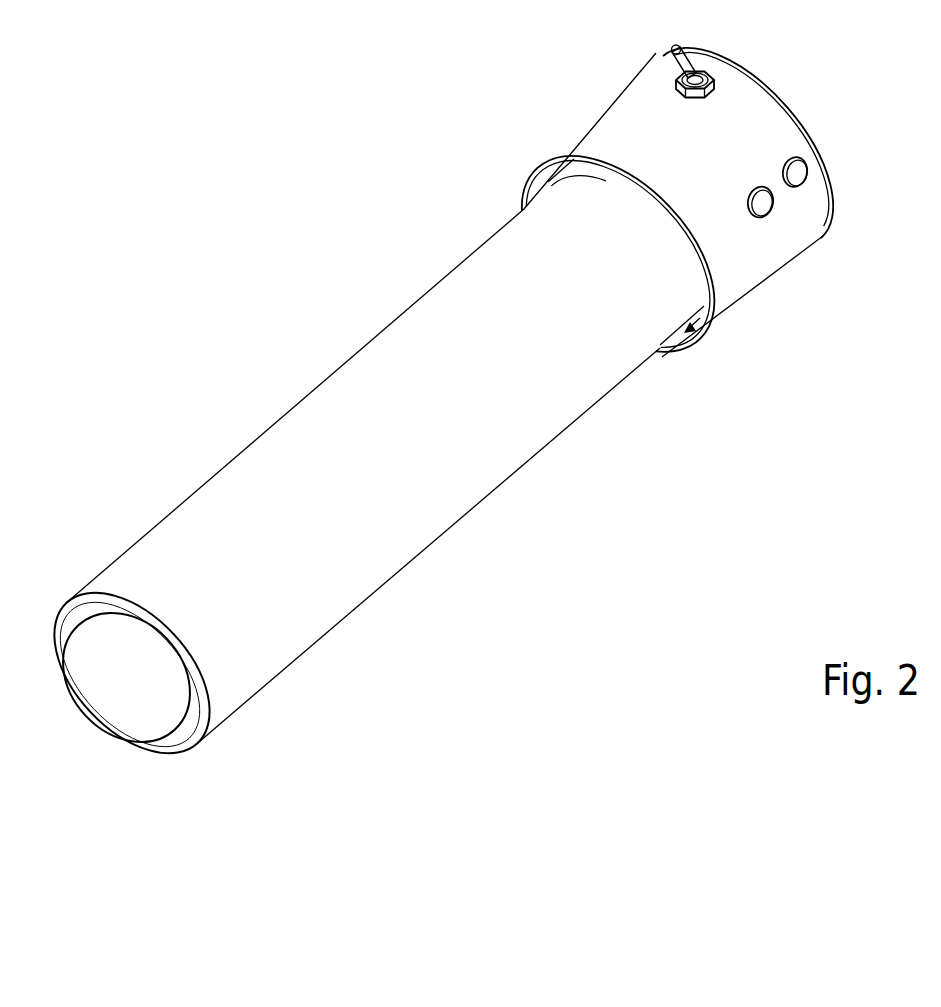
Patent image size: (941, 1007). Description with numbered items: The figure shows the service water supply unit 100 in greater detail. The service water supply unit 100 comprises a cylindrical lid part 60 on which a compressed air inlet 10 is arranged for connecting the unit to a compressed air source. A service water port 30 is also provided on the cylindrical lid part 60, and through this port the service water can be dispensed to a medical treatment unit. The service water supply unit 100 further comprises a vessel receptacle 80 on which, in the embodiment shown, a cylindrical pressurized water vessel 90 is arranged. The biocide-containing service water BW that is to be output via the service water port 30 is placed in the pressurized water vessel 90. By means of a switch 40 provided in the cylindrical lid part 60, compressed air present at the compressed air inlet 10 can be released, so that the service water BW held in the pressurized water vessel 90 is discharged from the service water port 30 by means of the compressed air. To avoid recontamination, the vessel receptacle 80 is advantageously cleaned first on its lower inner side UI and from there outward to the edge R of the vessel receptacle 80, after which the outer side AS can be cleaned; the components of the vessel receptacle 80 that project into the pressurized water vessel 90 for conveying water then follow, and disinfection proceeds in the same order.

The compressed air inlet 10 is at (799, 171).
The service water port 30 is at (763, 210).
The switch 40 is at (700, 69).
The cylindrical lid part 60 is at (721, 340).
The vessel receptacle 80 is at (549, 173).
The pressurized water vessel 90 is at (432, 519).
The service water supply unit 100 is at (655, 548).
The outer side AS is at (578, 103).
The service water BW is at (291, 448).
The lower inner side UI is at (677, 350).
The edge R is at (686, 352).